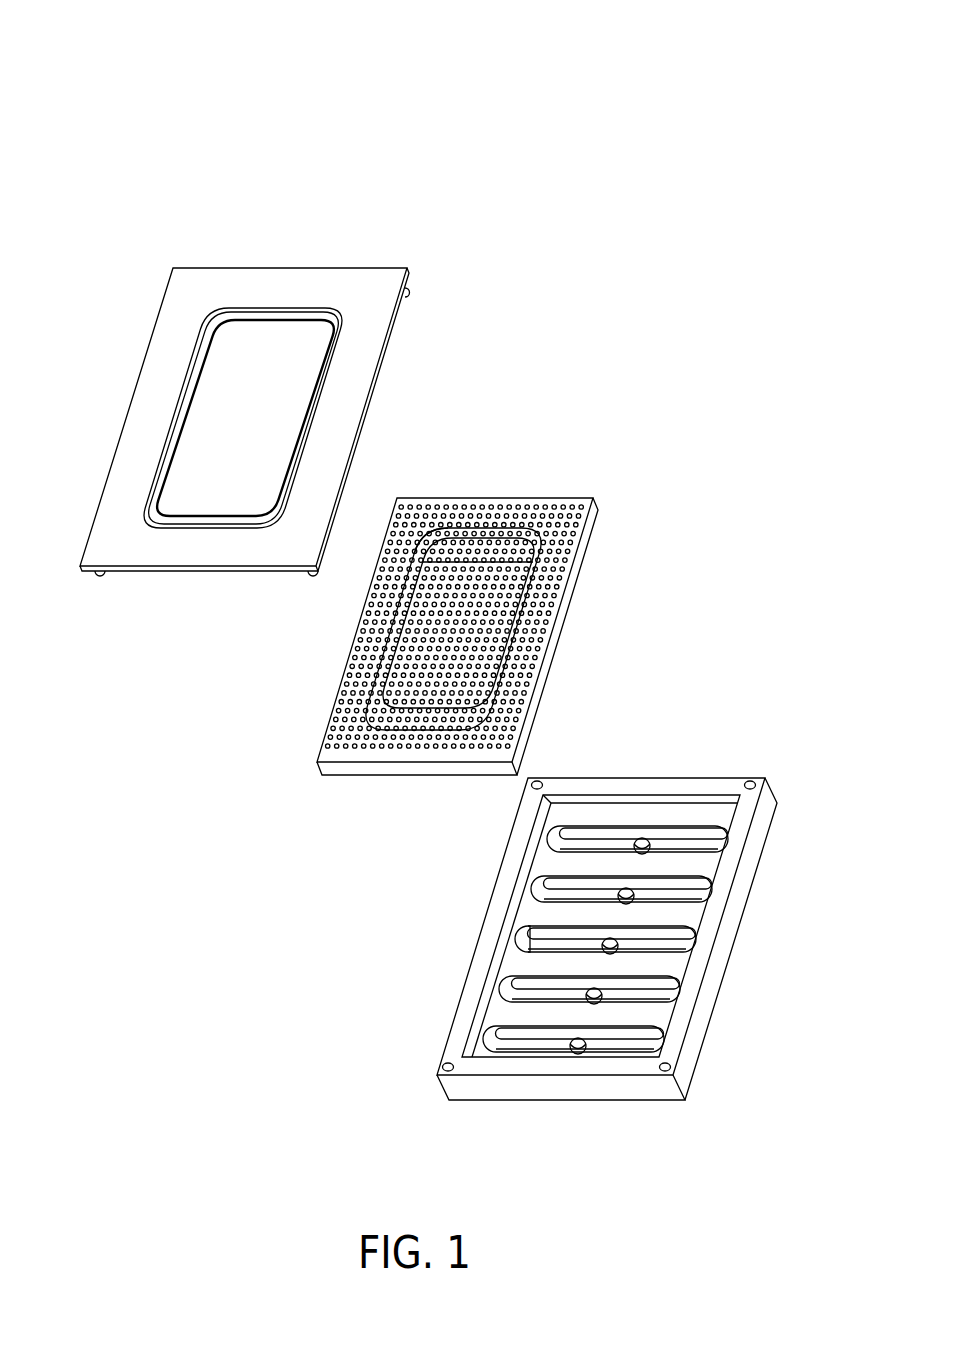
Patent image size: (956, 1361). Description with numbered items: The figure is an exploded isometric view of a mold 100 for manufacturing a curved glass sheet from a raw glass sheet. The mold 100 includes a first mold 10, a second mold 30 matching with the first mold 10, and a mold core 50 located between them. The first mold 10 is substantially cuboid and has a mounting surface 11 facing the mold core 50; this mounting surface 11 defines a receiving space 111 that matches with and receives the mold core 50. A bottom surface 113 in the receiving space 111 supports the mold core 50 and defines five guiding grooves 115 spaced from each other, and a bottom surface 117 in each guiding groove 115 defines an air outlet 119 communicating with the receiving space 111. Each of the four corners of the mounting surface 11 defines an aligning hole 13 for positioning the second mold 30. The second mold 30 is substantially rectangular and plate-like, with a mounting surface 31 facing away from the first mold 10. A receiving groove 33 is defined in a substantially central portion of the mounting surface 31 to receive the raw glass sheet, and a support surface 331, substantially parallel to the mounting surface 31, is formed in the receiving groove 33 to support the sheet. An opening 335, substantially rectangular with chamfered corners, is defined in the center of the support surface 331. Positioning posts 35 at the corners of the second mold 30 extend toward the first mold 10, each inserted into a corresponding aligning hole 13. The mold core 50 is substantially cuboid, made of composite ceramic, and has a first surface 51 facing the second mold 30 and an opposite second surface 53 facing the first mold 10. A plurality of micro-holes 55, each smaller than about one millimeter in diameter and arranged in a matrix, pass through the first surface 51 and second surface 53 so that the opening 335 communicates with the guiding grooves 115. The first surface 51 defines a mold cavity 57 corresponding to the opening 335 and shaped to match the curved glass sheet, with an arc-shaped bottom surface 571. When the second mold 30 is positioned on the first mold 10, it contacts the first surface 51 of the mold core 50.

The mold 100 is at (460, 563).
The first mold 10 is at (636, 908).
The mounting surface 11 is at (740, 939).
The receiving space 111 is at (601, 887).
The bottom surface 113 is at (645, 926).
The guiding grooves 115 is at (611, 933).
The bottom surface 117 is at (487, 918).
The air outlet 119 is at (525, 893).
The aligning hole 13 is at (603, 894).
The second mold 30 is at (277, 418).
The mounting surface 31 is at (244, 393).
The receiving groove 33 is at (245, 366).
The support surface 331 is at (216, 400).
The opening 335 is at (203, 418).
The positioning posts 35 is at (252, 459).
The mold core 50 is at (584, 763).
The first surface 51 is at (496, 626).
The second surface 53 is at (488, 636).
The micro-holes 55 is at (493, 578).
The mold cavity 57 is at (502, 623).
The bottom surface 571 is at (423, 490).